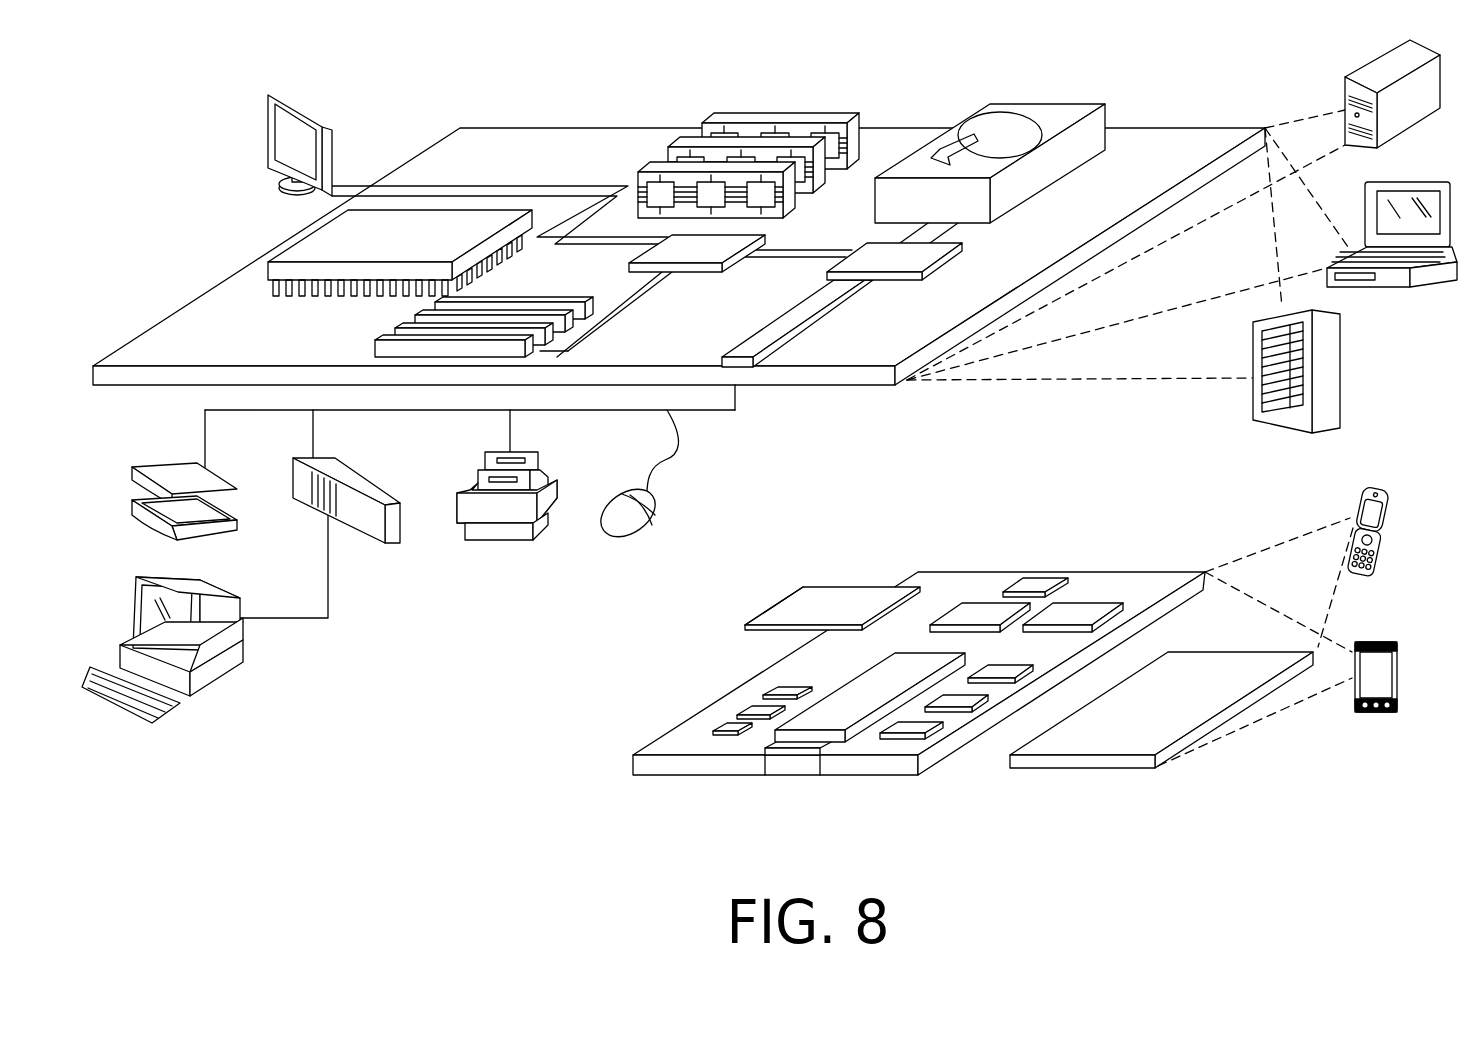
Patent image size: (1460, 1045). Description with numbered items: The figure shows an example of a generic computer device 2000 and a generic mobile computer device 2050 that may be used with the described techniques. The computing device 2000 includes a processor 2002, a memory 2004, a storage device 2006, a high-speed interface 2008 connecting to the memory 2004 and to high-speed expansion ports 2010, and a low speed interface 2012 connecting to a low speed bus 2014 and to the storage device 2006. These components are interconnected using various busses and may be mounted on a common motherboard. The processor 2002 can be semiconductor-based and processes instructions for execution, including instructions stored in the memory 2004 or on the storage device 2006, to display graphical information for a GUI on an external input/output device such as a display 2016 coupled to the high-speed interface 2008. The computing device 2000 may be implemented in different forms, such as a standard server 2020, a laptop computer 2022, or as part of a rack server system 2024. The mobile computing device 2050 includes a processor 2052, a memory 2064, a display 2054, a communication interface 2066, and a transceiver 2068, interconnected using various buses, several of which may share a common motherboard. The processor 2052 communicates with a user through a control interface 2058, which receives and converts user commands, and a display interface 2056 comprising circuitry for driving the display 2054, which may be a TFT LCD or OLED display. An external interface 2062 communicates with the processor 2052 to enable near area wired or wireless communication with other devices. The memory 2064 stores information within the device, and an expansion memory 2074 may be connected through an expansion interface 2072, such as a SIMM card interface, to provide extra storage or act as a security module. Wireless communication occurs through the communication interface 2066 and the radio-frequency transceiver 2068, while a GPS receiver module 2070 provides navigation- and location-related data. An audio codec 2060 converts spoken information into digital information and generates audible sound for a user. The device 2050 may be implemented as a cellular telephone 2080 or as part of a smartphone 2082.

The computing device 2000 is at (406, 68).
The processor 2002 is at (294, 242).
The memory 2004 is at (782, 120).
The storage device 2006 is at (1036, 102).
The high-speed interface 2008 is at (708, 268).
The high-speed expansion ports 2010 is at (402, 326).
The low speed interface 2012 is at (862, 253).
The low speed bus 2014 is at (744, 352).
The display 2016 is at (270, 94).
The standard server 2020 is at (1368, 70).
The laptop computer 2022 is at (1428, 182).
The rack server system 2024 is at (1342, 369).
The mobile computing device 2050 is at (582, 790).
The processor 2052 is at (837, 702).
The display 2054 is at (1205, 666).
The display interface 2056 is at (918, 728).
The control interface 2058 is at (963, 700).
The audio codec 2060 is at (1005, 668).
The external interface 2062 is at (793, 758).
The memory 2064 is at (740, 714).
The communication interface 2066 is at (980, 609).
The transceiver 2068 is at (1080, 609).
The GPS receiver module 2070 is at (1038, 582).
The expansion interface 2072 is at (897, 586).
The expansion memory 2074 is at (808, 586).
The cellular telephone 2080 is at (1364, 490).
The smartphone 2082 is at (1366, 642).